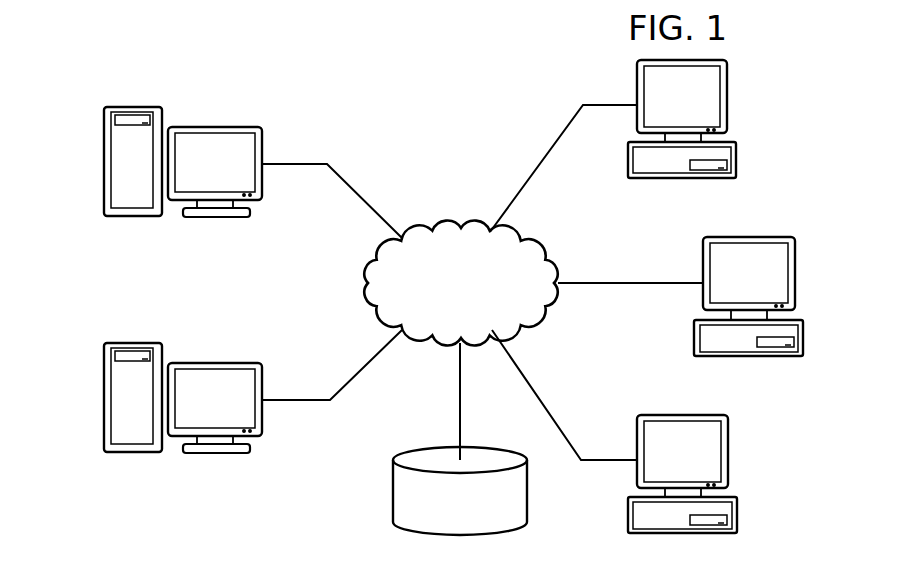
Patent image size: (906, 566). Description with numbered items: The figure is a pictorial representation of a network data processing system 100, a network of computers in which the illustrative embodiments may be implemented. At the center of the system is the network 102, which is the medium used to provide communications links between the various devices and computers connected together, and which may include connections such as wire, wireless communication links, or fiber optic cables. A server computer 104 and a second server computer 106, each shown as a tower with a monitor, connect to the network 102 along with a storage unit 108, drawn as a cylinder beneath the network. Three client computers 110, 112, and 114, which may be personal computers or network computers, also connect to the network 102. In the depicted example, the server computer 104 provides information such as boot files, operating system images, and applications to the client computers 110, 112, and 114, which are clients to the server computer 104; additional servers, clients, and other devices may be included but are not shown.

The network data processing system 100 is at (336, 80).
The network 102 is at (455, 223).
The server computer 104 is at (104, 158).
The server computer 106 is at (104, 397).
The storage unit 108 is at (393, 491).
The client computer 110 is at (739, 161).
The client computer 112 is at (805, 340).
The client computer 114 is at (739, 516).